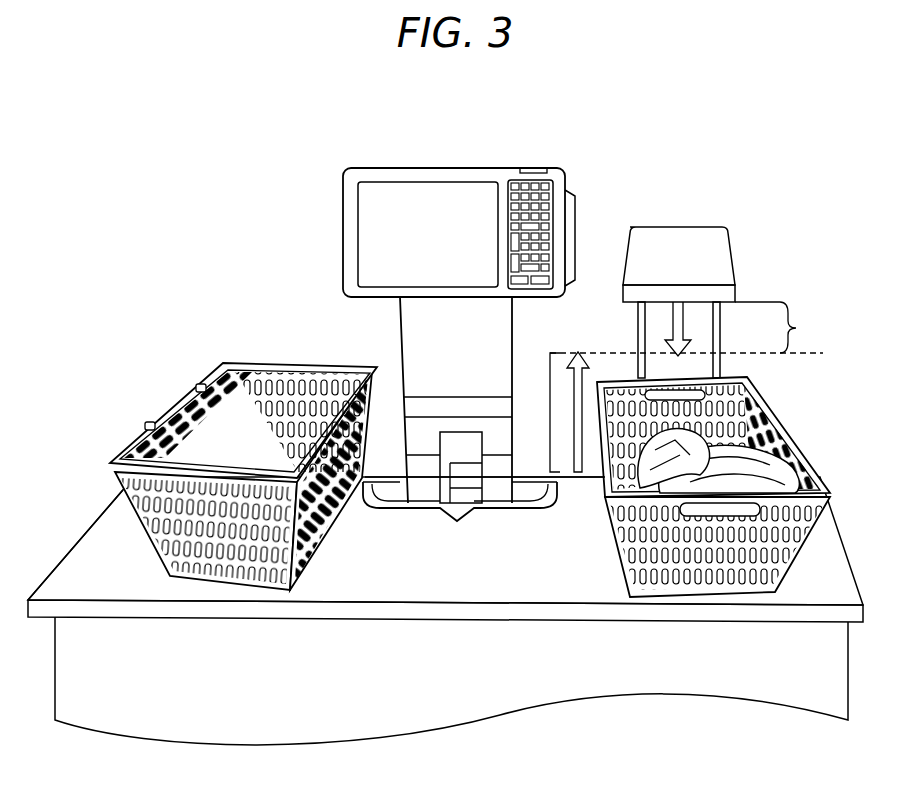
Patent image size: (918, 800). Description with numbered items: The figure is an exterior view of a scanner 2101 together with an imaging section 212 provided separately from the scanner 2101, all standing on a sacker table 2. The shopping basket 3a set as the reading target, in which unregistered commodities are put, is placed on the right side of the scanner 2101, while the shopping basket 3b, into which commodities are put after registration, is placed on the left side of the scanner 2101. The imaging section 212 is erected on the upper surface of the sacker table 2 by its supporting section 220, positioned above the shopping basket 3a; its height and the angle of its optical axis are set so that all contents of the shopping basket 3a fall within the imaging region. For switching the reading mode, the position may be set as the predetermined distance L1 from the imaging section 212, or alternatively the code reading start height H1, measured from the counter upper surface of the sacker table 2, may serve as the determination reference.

The sacker table 2 is at (823, 548).
The scanner 2101 is at (457, 150).
The imaging section 212 is at (672, 227).
The supporting section 220 is at (637, 316).
The shopping basket 3a is at (627, 548).
The shopping basket 3b is at (178, 412).
The code reading start height H1 is at (548, 418).
The predetermined distance L1 is at (780, 327).